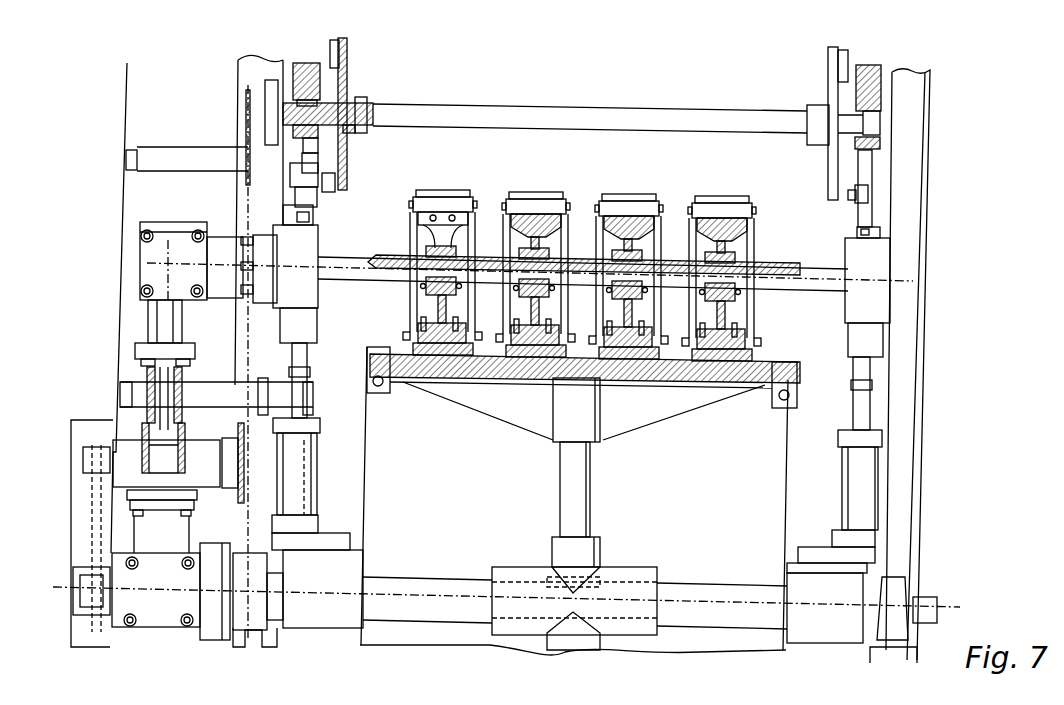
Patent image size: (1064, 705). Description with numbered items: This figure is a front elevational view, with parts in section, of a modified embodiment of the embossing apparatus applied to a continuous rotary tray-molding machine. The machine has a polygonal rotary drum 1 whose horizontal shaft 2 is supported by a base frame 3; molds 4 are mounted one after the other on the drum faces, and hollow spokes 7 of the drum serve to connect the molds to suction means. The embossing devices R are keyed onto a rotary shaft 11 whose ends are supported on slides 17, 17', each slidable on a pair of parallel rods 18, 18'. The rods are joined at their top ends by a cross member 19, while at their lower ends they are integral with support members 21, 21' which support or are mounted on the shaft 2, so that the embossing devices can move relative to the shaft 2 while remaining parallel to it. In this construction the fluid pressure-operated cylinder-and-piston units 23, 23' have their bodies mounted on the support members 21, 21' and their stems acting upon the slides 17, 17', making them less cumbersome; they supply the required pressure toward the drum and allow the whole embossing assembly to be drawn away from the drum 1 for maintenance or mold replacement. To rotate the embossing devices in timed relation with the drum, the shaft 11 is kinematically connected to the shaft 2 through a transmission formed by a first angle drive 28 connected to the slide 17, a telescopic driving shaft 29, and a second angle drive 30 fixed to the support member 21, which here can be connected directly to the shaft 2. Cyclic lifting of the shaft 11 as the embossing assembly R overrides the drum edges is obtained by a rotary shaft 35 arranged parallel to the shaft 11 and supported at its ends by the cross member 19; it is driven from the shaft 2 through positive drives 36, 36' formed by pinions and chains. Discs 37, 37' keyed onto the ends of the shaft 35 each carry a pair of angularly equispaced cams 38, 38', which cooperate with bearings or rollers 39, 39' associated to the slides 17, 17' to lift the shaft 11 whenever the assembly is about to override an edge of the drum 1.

The polygonal rotary drum 1 is at (790, 424).
The horizontal shaft 2 is at (708, 628).
The base frame 3 is at (248, 640).
The molds 4 is at (672, 378).
The hollow spokes 7 is at (588, 475).
The rotary shaft 11 is at (347, 278).
The slide 17 is at (306, 265).
The slide 17' is at (910, 292).
The parallel rods 18 is at (258, 271).
The parallel rods 18' is at (913, 279).
The cross member 19 is at (866, 78).
The support member 21 is at (281, 602).
The support member 21' is at (862, 630).
The cylinder-and-piston unit 23 is at (313, 475).
The cylinder-and-piston unit 23' is at (881, 501).
The first angle drive 28 is at (145, 259).
The driving shaft 29 is at (148, 373).
The second angle drive 30 is at (140, 530).
The rotary shaft 35 is at (475, 95).
The positive drive 36 is at (239, 132).
The positive drive 36' is at (70, 538).
The disc 37 is at (363, 114).
The disc 37' is at (815, 123).
The cams 38 is at (316, 46).
The cams 38' is at (863, 49).
The bearing or roller 39 is at (336, 179).
The bearing or roller 39' is at (909, 185).
The embossing devices R is at (712, 190).